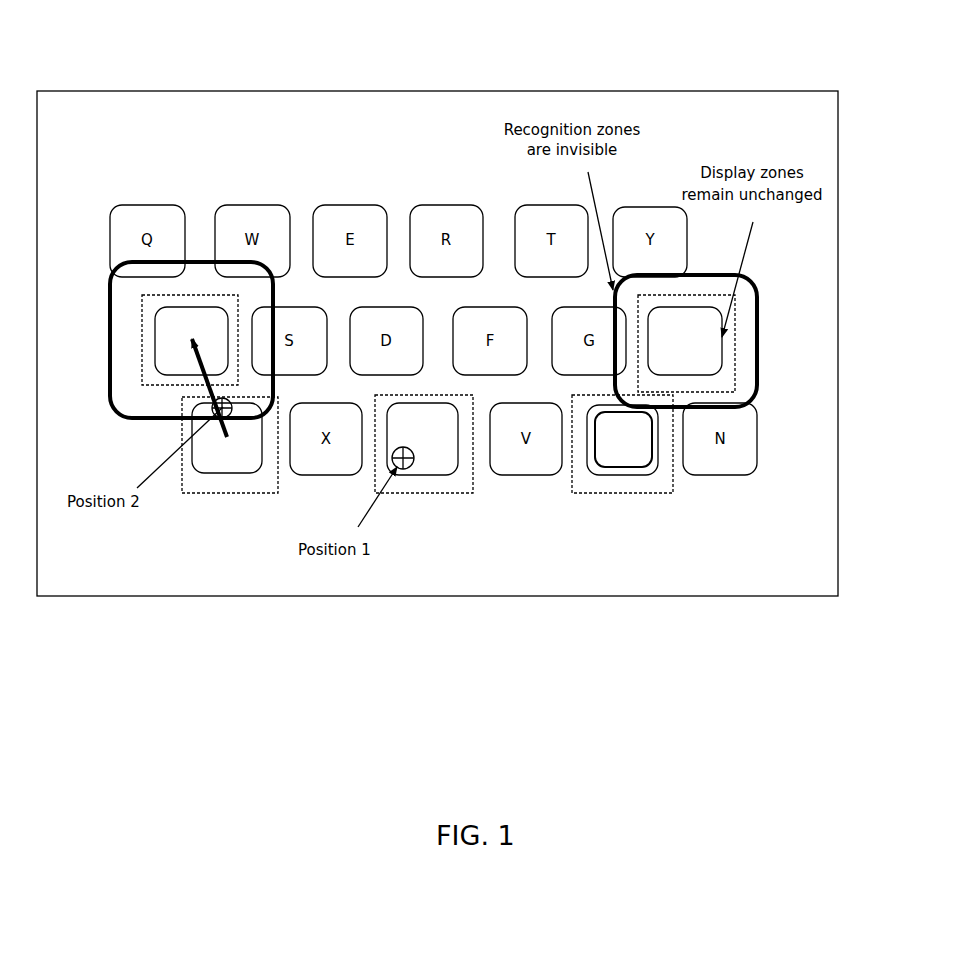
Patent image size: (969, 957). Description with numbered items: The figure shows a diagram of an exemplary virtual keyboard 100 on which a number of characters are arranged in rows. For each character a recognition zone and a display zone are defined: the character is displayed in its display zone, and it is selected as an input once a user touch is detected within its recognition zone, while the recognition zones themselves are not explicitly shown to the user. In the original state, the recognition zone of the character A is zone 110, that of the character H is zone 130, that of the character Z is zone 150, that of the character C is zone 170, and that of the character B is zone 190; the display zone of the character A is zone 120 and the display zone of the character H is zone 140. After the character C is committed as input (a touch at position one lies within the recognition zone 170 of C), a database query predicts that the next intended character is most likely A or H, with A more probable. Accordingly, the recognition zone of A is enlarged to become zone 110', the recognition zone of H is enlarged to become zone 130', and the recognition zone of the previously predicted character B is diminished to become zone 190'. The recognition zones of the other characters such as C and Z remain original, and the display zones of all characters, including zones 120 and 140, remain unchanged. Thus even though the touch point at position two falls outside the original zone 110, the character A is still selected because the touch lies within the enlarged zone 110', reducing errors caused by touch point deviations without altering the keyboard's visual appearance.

The virtual keyboard 100 is at (738, 112).
The recognition zone of the character A 110 is at (147, 316).
The adjusted recognition zone of the character A 110' is at (191, 304).
The display zone of the character A 120 is at (153, 343).
The recognition zone of the character H 130 is at (722, 359).
The adjusted recognition zone of the character H 130' is at (713, 335).
The display zone of the character H 140 is at (735, 350).
The recognition zone of the character Z 150 is at (234, 495).
The recognition zone of the character C 170 is at (440, 495).
The recognition zone of the character B 190 is at (593, 463).
The adjusted recognition zone of the character B 190' is at (628, 473).